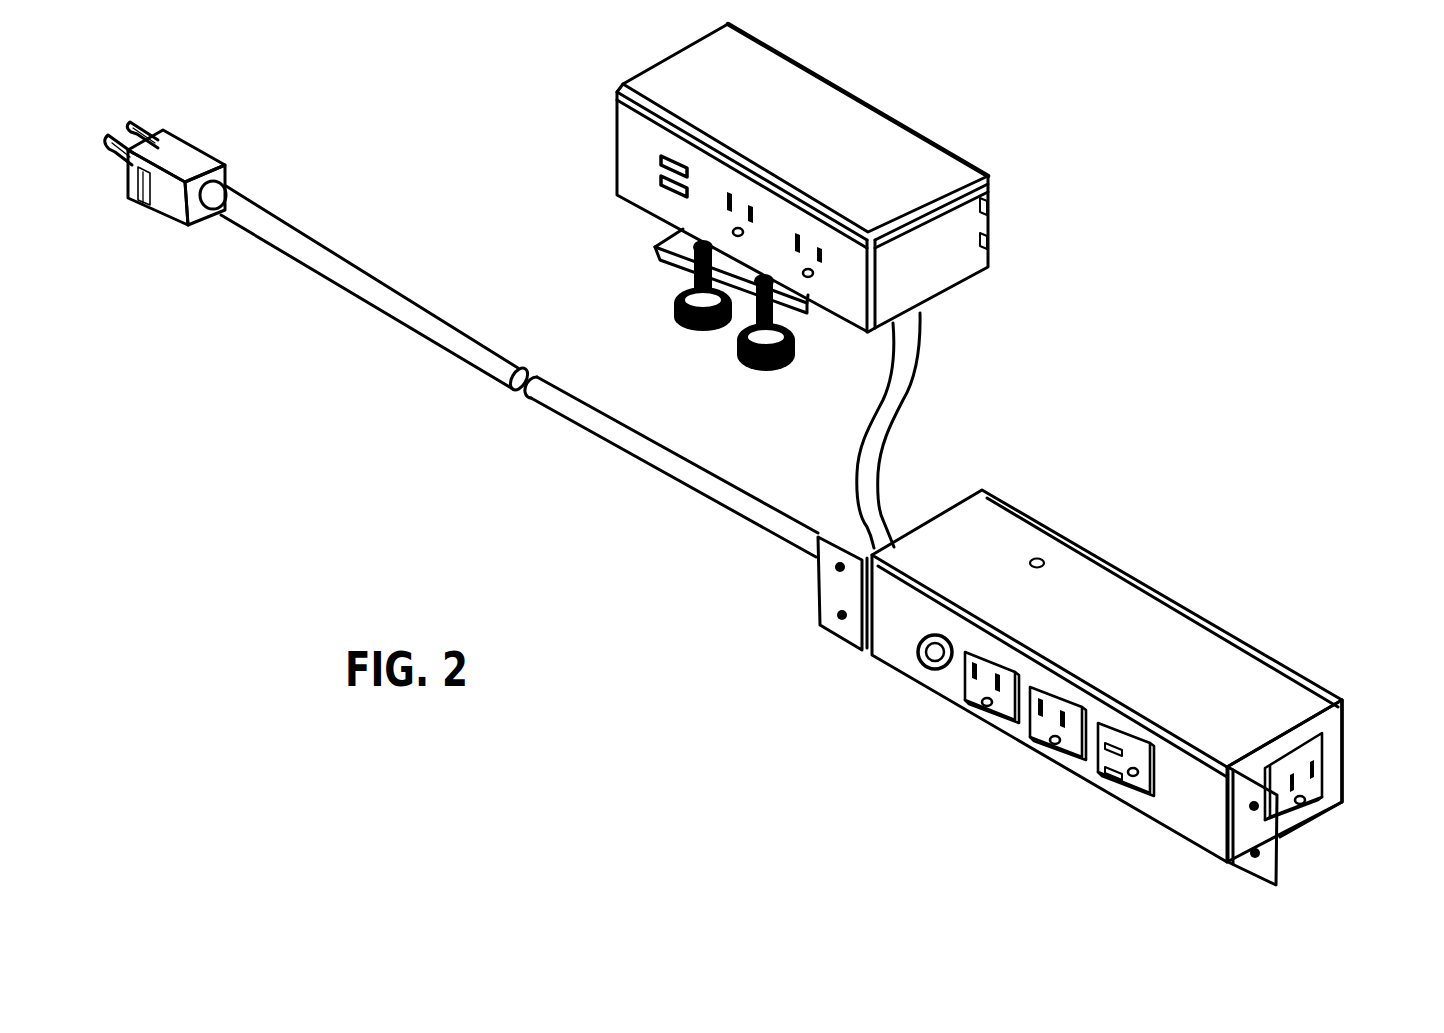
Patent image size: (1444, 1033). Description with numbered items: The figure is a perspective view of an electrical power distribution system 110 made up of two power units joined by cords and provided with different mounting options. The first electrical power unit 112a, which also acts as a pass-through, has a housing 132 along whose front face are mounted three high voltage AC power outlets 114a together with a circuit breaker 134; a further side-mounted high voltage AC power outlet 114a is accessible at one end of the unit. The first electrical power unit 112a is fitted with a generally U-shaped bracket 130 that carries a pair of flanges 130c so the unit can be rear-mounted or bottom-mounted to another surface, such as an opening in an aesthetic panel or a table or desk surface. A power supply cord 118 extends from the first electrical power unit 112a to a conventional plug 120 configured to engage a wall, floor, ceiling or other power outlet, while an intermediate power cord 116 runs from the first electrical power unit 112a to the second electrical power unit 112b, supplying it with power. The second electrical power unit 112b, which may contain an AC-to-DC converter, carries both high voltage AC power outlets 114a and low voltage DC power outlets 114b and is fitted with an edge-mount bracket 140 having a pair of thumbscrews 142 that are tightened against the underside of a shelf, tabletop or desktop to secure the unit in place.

The electrical power distribution system 110 is at (1192, 71).
The first electrical power unit 112a is at (963, 773).
The second electrical power unit 112b is at (590, 140).
The high voltage AC power outlet 114a is at (797, 216).
The low voltage DC power outlet 114b is at (640, 178).
The intermediate power cord 116 is at (905, 402).
The power supply cord 118 is at (588, 430).
The plug 120 is at (198, 142).
The U-shaped bracket 130 is at (1343, 710).
The flange 130c is at (822, 632).
The housing 132 is at (1253, 683).
The circuit breaker 134 is at (906, 652).
The edge-mount bracket 140 is at (636, 242).
The thumbscrew 142 is at (678, 323).